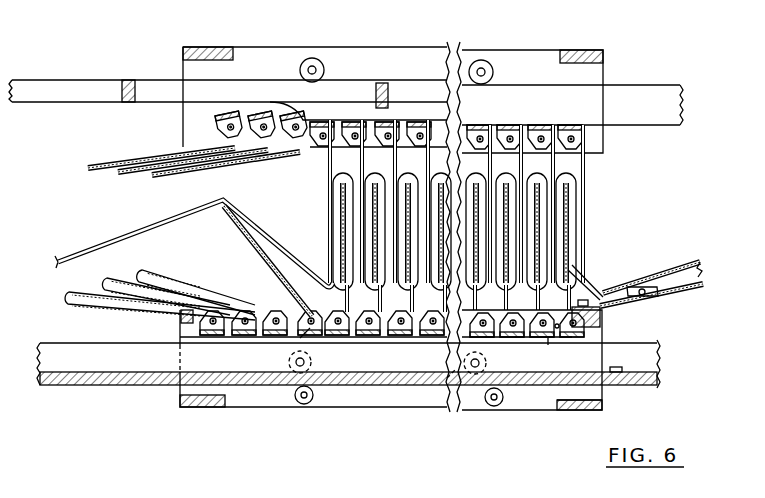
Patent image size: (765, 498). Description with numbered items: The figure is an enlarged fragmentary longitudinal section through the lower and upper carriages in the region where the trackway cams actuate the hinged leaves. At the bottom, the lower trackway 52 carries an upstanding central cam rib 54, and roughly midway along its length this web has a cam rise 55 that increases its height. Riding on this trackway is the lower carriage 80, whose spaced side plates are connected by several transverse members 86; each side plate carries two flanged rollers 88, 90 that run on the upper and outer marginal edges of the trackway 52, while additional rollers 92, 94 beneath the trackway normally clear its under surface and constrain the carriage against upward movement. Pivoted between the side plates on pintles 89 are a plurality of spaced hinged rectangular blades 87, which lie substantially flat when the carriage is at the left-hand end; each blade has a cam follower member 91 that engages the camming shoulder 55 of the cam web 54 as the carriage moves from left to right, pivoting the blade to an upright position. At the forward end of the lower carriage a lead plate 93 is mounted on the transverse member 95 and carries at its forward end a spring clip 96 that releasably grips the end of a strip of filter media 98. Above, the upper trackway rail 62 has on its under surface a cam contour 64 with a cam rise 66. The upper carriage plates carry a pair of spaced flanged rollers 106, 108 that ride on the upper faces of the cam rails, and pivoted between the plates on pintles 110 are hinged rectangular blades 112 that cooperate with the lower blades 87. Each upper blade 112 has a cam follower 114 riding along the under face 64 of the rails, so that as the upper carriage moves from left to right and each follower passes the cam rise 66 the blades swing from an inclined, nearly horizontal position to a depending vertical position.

The lower trackway 52 is at (656, 381).
The cam rib 54 is at (645, 353).
The cam rise 55 is at (300, 338).
The rail 62 is at (518, 95).
The cam contour 64 is at (157, 96).
The cam rise 66 is at (300, 108).
The carriage 80 is at (512, 398).
The transverse member 86 is at (580, 405).
The hinged blade 87 is at (222, 292).
The flanged roller 88 is at (448, 378).
The pintle 89 is at (556, 330).
The flanged roller 90 is at (308, 362).
The cam follower member 91 is at (548, 338).
The roller 92 is at (492, 405).
The lead plate 93 is at (668, 290).
The roller 94 is at (310, 400).
The transverse member 95 is at (602, 318).
The spring clip 96 is at (656, 286).
The strip of filter media 98 is at (148, 232).
The flanged roller 106 is at (482, 60).
The flanged roller 108 is at (308, 60).
The pintle 110 is at (573, 124).
The hinged blade 112 is at (103, 170).
The cam follower 114 is at (225, 112).